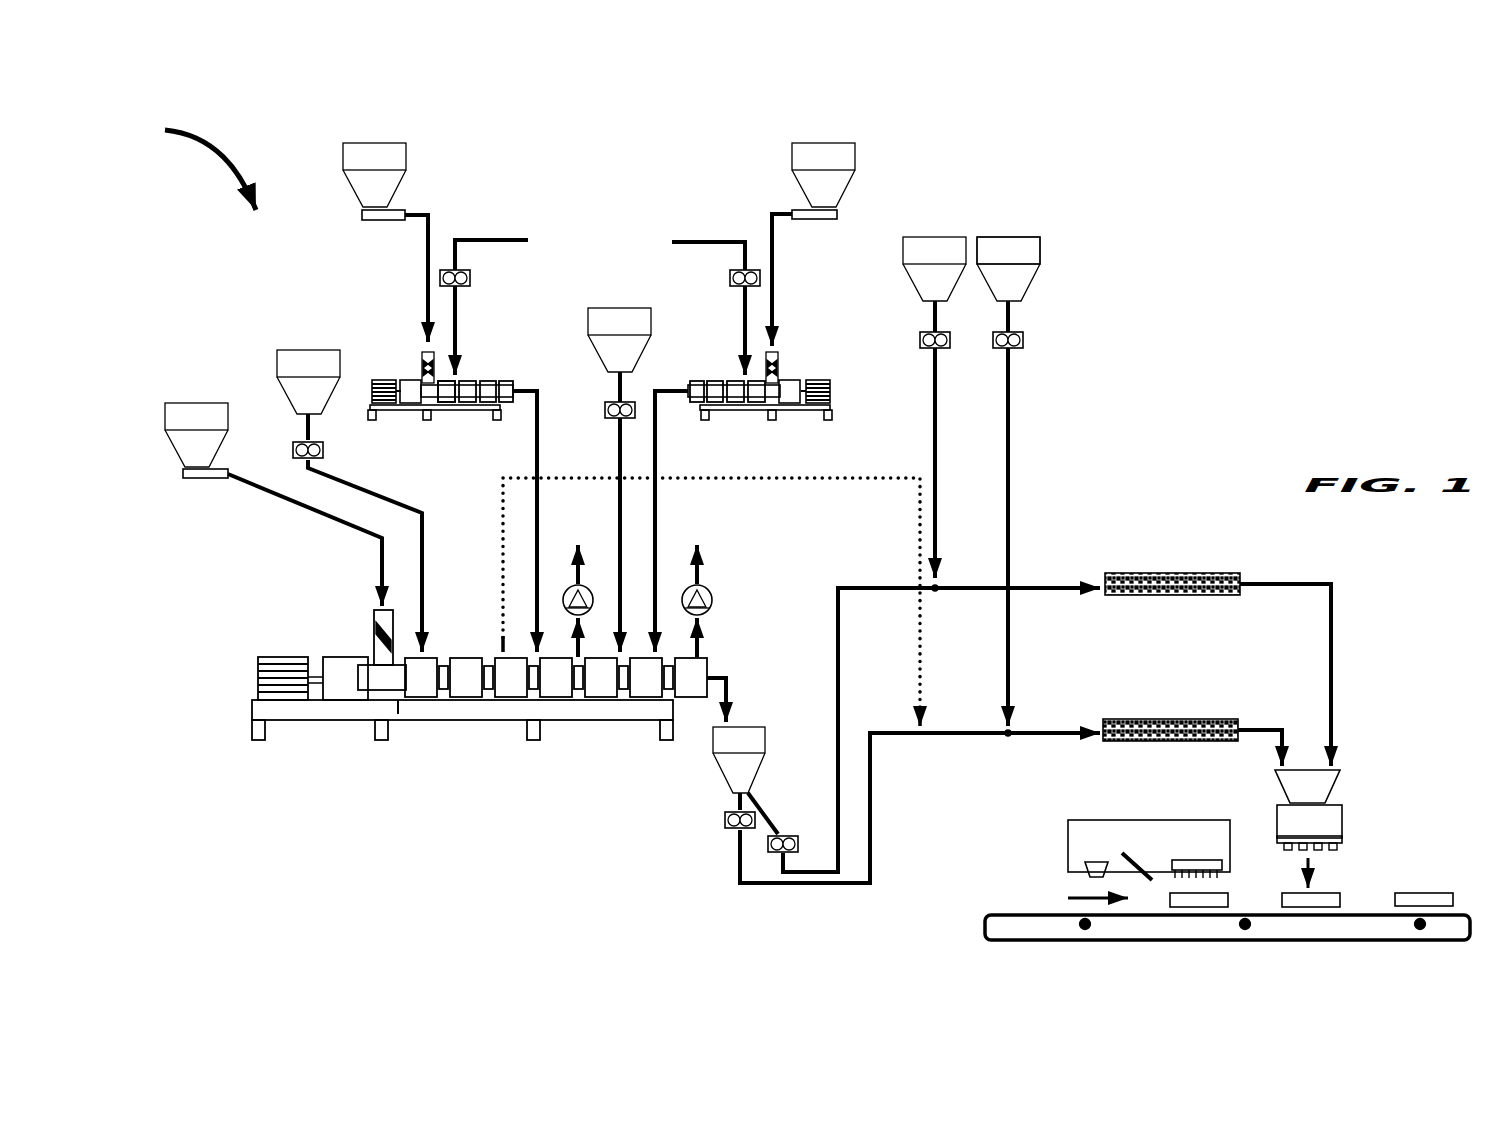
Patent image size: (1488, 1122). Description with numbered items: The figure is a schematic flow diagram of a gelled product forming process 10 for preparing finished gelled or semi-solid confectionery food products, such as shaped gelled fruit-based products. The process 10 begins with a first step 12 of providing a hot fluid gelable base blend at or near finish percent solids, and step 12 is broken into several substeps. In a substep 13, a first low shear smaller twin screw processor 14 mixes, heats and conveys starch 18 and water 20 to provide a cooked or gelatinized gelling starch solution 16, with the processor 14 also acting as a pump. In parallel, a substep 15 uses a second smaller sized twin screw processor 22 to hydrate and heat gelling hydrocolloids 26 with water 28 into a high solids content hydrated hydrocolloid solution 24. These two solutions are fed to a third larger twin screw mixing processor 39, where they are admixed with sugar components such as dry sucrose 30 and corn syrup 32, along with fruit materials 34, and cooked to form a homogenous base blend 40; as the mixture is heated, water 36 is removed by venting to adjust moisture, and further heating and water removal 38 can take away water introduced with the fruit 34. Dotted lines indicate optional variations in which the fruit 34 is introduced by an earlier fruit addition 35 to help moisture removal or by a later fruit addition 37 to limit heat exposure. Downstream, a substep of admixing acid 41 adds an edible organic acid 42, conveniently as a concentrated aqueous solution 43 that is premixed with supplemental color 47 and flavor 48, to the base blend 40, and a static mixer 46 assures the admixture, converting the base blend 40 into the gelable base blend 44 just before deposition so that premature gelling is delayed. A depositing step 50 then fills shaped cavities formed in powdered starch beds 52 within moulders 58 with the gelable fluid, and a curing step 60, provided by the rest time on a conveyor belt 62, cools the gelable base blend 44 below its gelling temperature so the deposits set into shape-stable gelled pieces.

The gelled product forming process 10 is at (185, 167).
The first step 12 is at (1350, 784).
The substep 13 is at (492, 386).
The first low shear smaller twin screw processor 14 is at (410, 406).
The substep 15 is at (656, 455).
The gelatinized gelling starch solution 16 is at (538, 392).
The starch 18 is at (346, 143).
The water 20 is at (458, 240).
The second smaller sized twin screw processor 22 is at (798, 385).
The hydrated hydrocolloid solution 24 is at (688, 388).
The gelling hydrocolloids 26 is at (853, 143).
The water 28 is at (745, 242).
The dry sucrose 30 is at (205, 403).
The corn syrup 32 is at (323, 350).
The fruit materials 34 is at (640, 308).
The earlier fruit addition 35 is at (503, 478).
The water 36 is at (578, 571).
The later fruit addition 37 is at (619, 464).
The further heating and water removal 38 is at (732, 582).
The third larger twin screw mixing processor 39 is at (458, 722).
The base blend 40 is at (733, 700).
The substep of admixing acid 41 is at (940, 588).
The edible organic acid 42 is at (903, 237).
The concentrated aqueous solution 43 is at (1012, 512).
The gelable base blend 44 is at (1315, 583).
The static mixer 46 is at (1172, 598).
The supplemental color 47 is at (1101, 223).
The flavor 48 is at (977, 237).
The depositing step 50 is at (1345, 838).
The powdered starch beds 52 is at (1282, 900).
The moulders 58 is at (1150, 820).
The curing step 60 is at (1418, 893).
The conveyor belt 62 is at (983, 915).